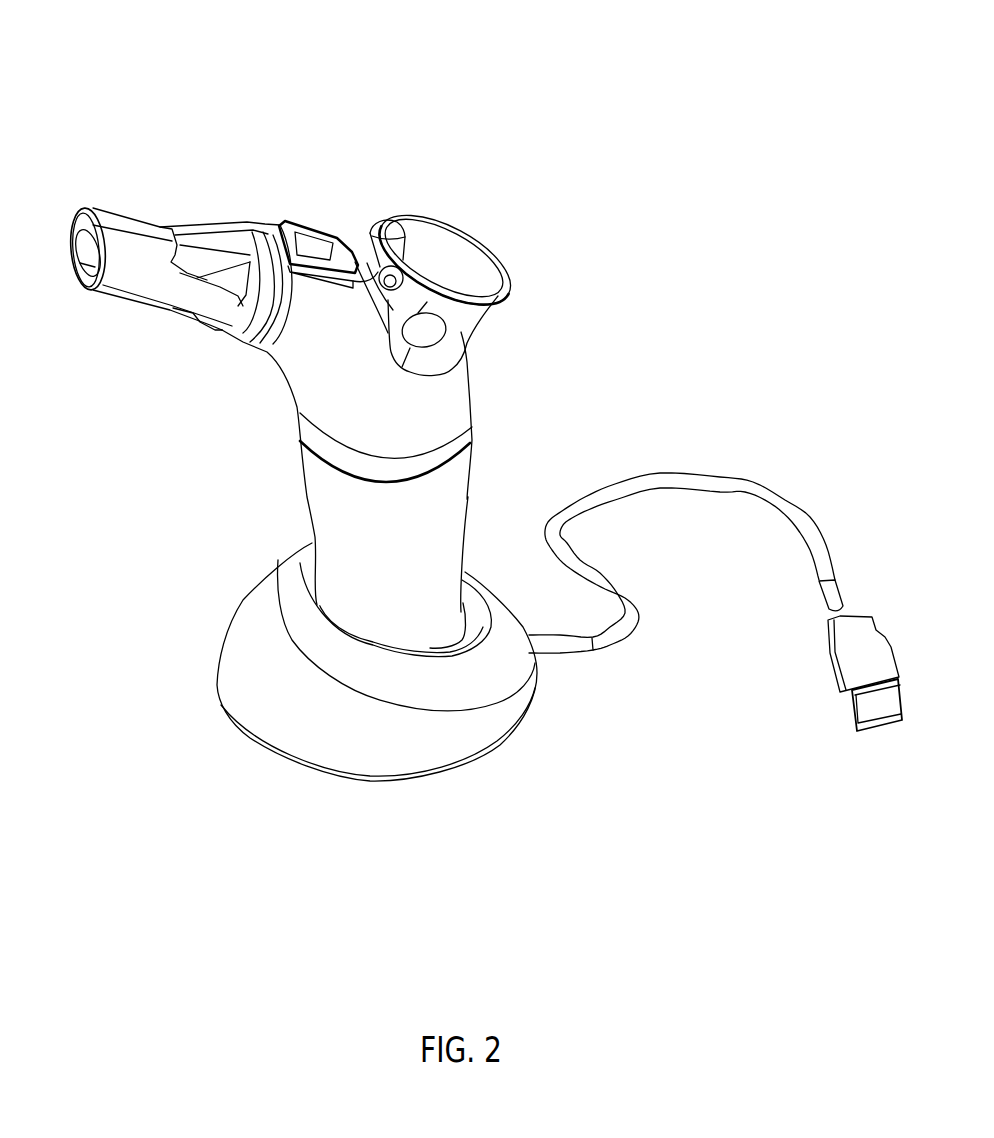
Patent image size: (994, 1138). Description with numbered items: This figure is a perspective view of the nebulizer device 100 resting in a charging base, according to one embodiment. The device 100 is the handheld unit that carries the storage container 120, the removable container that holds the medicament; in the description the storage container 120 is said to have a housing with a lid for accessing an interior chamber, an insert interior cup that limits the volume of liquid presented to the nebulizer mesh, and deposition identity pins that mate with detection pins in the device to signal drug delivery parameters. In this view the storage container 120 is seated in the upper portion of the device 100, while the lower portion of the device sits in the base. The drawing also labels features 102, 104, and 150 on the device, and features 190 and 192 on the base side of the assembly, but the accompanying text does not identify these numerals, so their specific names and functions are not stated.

The nebulizer device 100 is at (459, 120).
The display 102 is at (314, 228).
The handle housing 104 is at (475, 388).
The storage container 120 is at (440, 255).
The nozzle 150 is at (132, 216).
The charging base 190 is at (467, 585).
The charging cable 192 is at (808, 517).